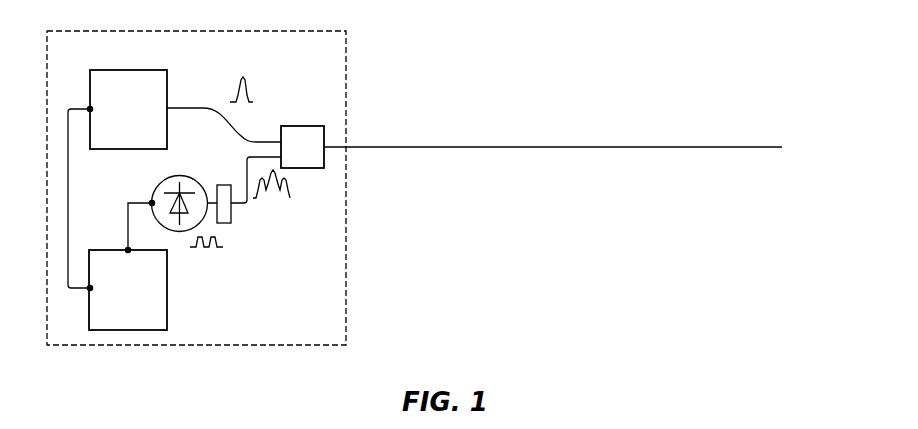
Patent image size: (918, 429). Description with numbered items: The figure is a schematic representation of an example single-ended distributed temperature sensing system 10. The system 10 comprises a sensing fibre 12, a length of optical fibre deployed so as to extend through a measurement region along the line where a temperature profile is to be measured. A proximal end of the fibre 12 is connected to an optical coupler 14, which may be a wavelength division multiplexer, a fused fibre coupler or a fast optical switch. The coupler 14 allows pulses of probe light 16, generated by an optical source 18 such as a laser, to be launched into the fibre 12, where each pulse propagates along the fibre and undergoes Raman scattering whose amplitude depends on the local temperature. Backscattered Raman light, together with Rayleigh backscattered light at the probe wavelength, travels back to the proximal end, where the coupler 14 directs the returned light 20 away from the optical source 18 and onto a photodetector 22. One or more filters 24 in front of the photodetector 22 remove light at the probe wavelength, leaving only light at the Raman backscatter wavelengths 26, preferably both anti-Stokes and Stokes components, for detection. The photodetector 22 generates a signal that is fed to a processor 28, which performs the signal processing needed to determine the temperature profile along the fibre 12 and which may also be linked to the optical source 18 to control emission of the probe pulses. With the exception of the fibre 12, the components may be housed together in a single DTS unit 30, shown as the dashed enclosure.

The system 10 is at (557, 61).
The sensing fibre 12 is at (645, 147).
The optical coupler 14 is at (302, 147).
The pulses of probe light 16 is at (247, 92).
The optical source 18 is at (128, 109).
The returned light 20 is at (277, 198).
The photodetector 22 is at (156, 179).
The filters 24 is at (231, 218).
The light at the Raman backscatter wavelengths 26 is at (207, 247).
The processor 28 is at (128, 290).
The DTS unit 30 is at (326, 31).